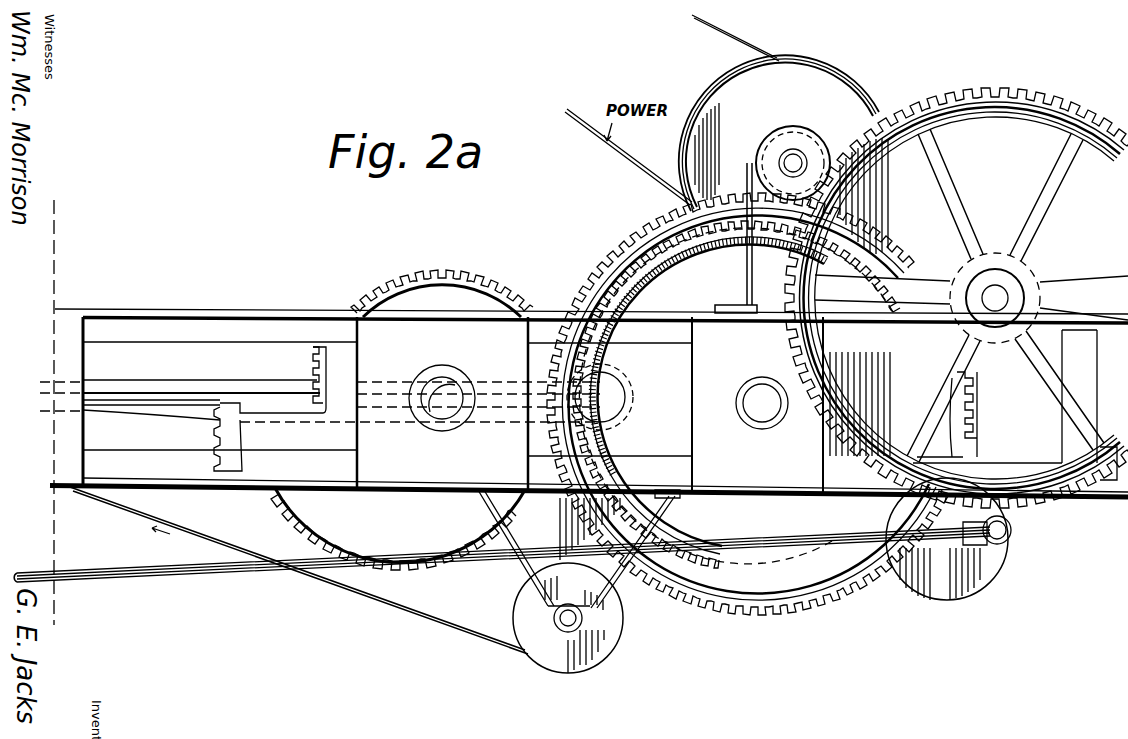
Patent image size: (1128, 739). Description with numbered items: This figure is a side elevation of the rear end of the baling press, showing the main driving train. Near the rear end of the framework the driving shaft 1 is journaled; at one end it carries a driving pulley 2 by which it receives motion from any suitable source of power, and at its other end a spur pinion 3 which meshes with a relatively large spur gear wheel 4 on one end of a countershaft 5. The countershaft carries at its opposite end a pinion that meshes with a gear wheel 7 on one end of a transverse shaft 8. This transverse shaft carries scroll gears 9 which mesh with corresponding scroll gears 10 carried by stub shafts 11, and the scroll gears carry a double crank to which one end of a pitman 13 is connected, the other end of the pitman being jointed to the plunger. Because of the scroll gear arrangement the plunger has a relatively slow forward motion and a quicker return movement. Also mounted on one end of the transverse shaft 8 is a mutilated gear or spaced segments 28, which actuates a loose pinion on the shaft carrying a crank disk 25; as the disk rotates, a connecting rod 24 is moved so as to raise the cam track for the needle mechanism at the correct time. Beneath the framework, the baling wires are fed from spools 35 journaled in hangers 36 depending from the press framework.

The driving shaft 1 is at (797, 160).
The driving pulley 2 is at (824, 72).
The spur pinion 3 is at (780, 126).
The spur gear wheel 4 is at (957, 88).
The countershaft 5 is at (998, 295).
The gear wheel 7 is at (603, 267).
The transverse shaft 8 is at (763, 407).
The scroll gears 9 is at (674, 263).
The scroll gears 10 is at (444, 272).
The stub shafts 11 is at (443, 402).
The pitman 13 is at (193, 382).
The rod 24 is at (221, 577).
The crank disk 25 is at (927, 592).
The mutilated gear or spaced segments 28 is at (605, 423).
The spools 35 is at (569, 674).
The hangers 36 is at (620, 583).